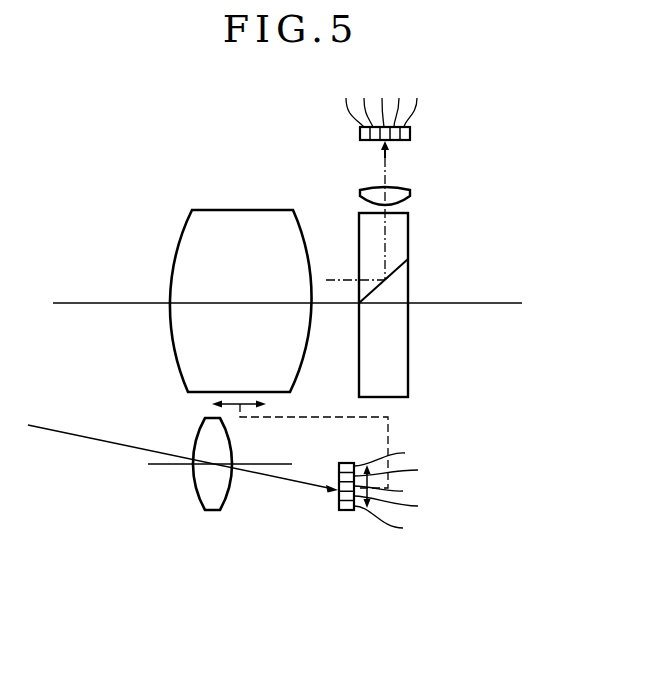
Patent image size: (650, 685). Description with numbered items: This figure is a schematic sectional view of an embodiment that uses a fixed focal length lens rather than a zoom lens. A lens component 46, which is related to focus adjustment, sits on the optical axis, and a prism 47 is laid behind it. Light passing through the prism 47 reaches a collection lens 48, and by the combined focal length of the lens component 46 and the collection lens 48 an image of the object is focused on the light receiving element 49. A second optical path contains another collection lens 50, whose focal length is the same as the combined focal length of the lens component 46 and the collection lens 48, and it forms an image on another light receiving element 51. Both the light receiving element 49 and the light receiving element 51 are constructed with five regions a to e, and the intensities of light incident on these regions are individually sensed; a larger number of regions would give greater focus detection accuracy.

The lens component 46 is at (245, 213).
The prism 47 is at (400, 351).
The collection lens 48 is at (402, 192).
The light receiving element 49 is at (418, 132).
The collection lens 50 is at (218, 490).
The light receiving element 51 is at (344, 517).